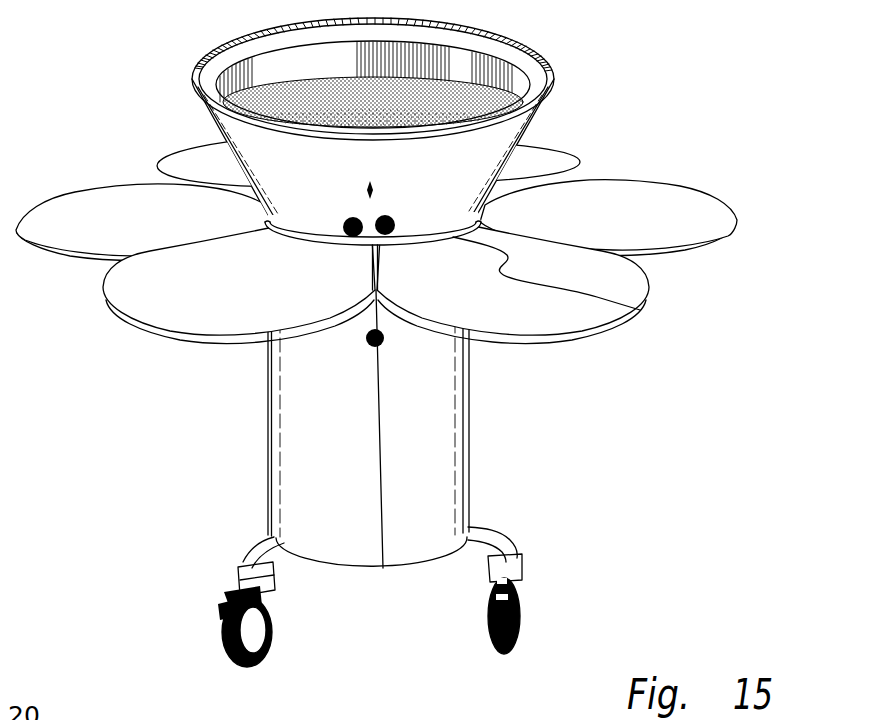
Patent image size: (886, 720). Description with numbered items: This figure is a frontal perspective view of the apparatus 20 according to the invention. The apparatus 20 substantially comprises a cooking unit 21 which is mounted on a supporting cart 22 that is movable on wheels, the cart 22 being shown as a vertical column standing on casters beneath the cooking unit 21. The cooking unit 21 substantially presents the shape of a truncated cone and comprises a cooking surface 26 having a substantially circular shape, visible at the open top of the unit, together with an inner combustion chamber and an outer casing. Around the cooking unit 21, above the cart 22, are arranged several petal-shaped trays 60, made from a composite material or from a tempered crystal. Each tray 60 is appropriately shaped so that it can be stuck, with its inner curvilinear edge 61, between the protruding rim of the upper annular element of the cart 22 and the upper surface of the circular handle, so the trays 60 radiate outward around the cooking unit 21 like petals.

The apparatus 20 is at (121, 91).
The cooking unit 21 is at (443, 184).
The cooking surface 26 is at (379, 127).
The supporting cart 22 is at (334, 447).
The petal-shaped trays 60 is at (134, 234).
The inner curvilinear edge 61 is at (640, 310).